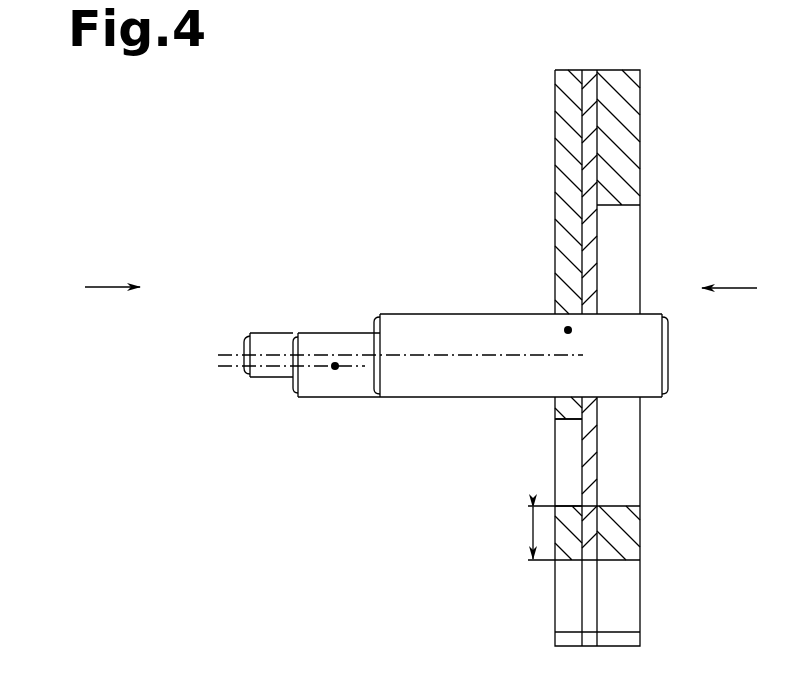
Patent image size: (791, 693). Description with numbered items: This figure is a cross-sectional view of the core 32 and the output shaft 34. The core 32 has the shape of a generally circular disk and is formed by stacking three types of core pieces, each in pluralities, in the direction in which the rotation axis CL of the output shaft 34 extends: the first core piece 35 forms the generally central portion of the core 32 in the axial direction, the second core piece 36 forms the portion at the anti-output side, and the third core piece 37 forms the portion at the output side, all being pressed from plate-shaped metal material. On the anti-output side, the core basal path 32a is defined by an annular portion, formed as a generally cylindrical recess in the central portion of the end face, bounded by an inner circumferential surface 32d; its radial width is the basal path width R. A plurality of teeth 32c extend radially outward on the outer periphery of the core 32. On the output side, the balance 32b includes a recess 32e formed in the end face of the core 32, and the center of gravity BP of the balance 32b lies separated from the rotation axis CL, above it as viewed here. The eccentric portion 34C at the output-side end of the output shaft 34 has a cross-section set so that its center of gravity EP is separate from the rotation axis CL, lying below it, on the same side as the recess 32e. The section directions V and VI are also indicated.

The core 32 is at (642, 623).
The core basal path 32a is at (633, 518).
The balance 32b is at (560, 115).
The teeth 32c is at (630, 577).
The inner circumferential surface 32d is at (625, 505).
The recess 32e is at (560, 466).
The output shaft 34 is at (433, 323).
The eccentric portion 34C is at (335, 347).
The first core piece 35 is at (590, 78).
The second core piece 36 is at (623, 78).
The third core piece 37 is at (563, 76).
The center of gravity of the balance BP is at (568, 330).
The center of gravity of the eccentric portion EP is at (335, 368).
The rotation axis CL is at (226, 355).
The basal path width R is at (520, 533).
The view direction V is at (101, 287).
The view direction VI is at (744, 287).